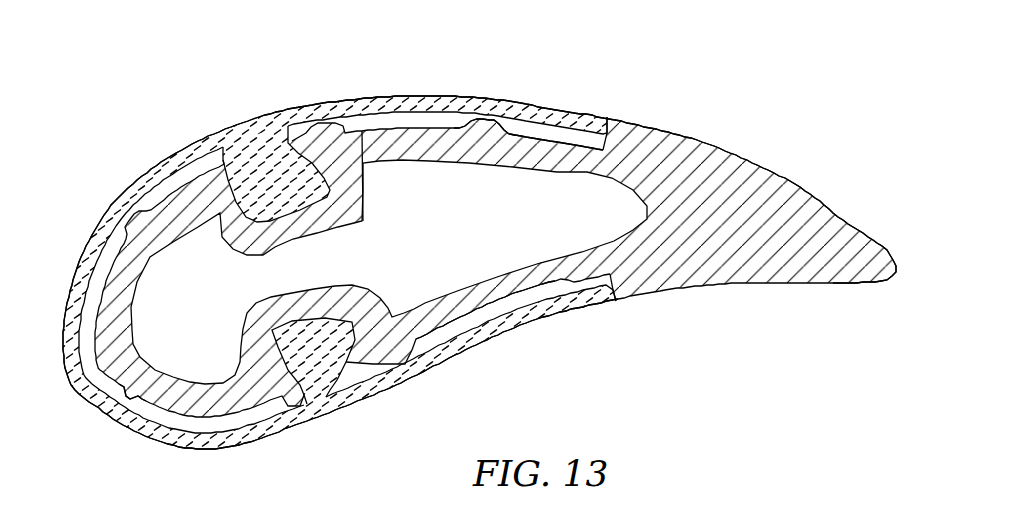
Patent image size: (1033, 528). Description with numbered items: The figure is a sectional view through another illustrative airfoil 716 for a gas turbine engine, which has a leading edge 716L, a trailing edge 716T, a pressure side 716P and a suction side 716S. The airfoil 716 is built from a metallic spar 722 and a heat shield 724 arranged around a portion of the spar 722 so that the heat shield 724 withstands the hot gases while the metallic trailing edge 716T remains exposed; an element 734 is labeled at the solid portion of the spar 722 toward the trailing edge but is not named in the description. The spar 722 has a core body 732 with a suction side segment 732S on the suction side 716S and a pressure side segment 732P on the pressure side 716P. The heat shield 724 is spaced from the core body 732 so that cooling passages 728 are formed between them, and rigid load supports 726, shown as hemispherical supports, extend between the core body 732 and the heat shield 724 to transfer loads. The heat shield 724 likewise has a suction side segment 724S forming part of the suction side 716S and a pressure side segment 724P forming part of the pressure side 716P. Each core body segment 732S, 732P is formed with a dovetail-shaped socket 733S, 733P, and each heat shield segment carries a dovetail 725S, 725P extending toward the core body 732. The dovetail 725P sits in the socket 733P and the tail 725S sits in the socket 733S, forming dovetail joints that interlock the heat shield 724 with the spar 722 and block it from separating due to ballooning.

The airfoil 716 is at (488, 227).
The suction side 716S is at (327, 96).
The pressure side 716P is at (494, 348).
The leading edge 716L is at (57, 334).
The trailing edge 716T is at (902, 273).
The spar 722 is at (653, 268).
The heat shield 724 is at (339, 237).
The suction side segment 724S is at (396, 104).
The pressure side segment 724P is at (428, 366).
The tail 725S is at (264, 137).
The dovetail 725P is at (312, 407).
The rigid load support 726 is at (488, 120).
The cooling passage 728 is at (132, 408).
The core body 732 is at (331, 278).
The suction side segment 732S is at (553, 140).
The pressure side segment 732P is at (463, 322).
The socket 733S is at (241, 190).
The socket 733P is at (277, 372).
The trailing edge solid region 734 is at (790, 189).